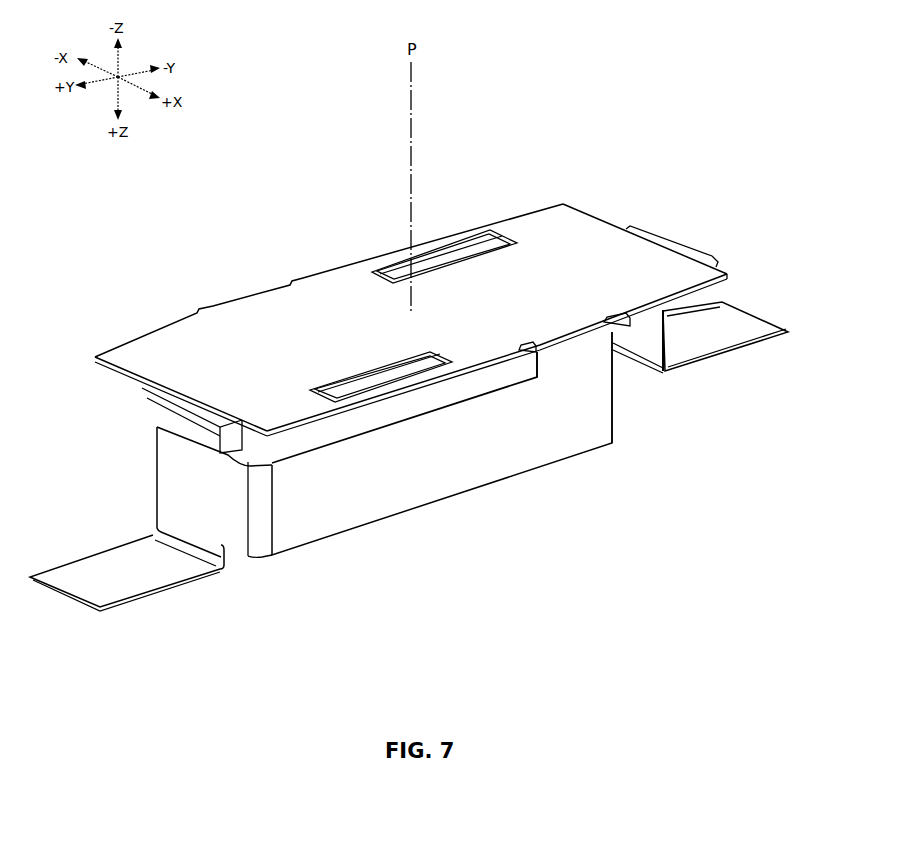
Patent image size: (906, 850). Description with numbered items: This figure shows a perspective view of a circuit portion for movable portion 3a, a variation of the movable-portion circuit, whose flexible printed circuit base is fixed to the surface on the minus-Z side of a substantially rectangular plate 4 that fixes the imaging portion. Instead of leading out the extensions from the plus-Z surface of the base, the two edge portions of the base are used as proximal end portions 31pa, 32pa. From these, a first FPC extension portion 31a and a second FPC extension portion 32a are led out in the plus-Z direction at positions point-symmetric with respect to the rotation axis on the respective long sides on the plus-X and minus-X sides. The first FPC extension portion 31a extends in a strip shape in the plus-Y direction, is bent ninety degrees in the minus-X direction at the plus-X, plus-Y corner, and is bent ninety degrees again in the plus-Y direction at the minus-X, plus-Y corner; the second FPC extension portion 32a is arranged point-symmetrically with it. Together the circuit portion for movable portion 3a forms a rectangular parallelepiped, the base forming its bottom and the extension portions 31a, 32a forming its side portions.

The circuit portion for movable portion 3a is at (352, 232).
The first FPC extension portion 31a is at (415, 485).
The proximal end portion 31pa is at (567, 343).
The second FPC extension portion 32a is at (687, 350).
The proximal end portion 32pa is at (257, 294).
The substantially rectangular plate 4 is at (141, 402).